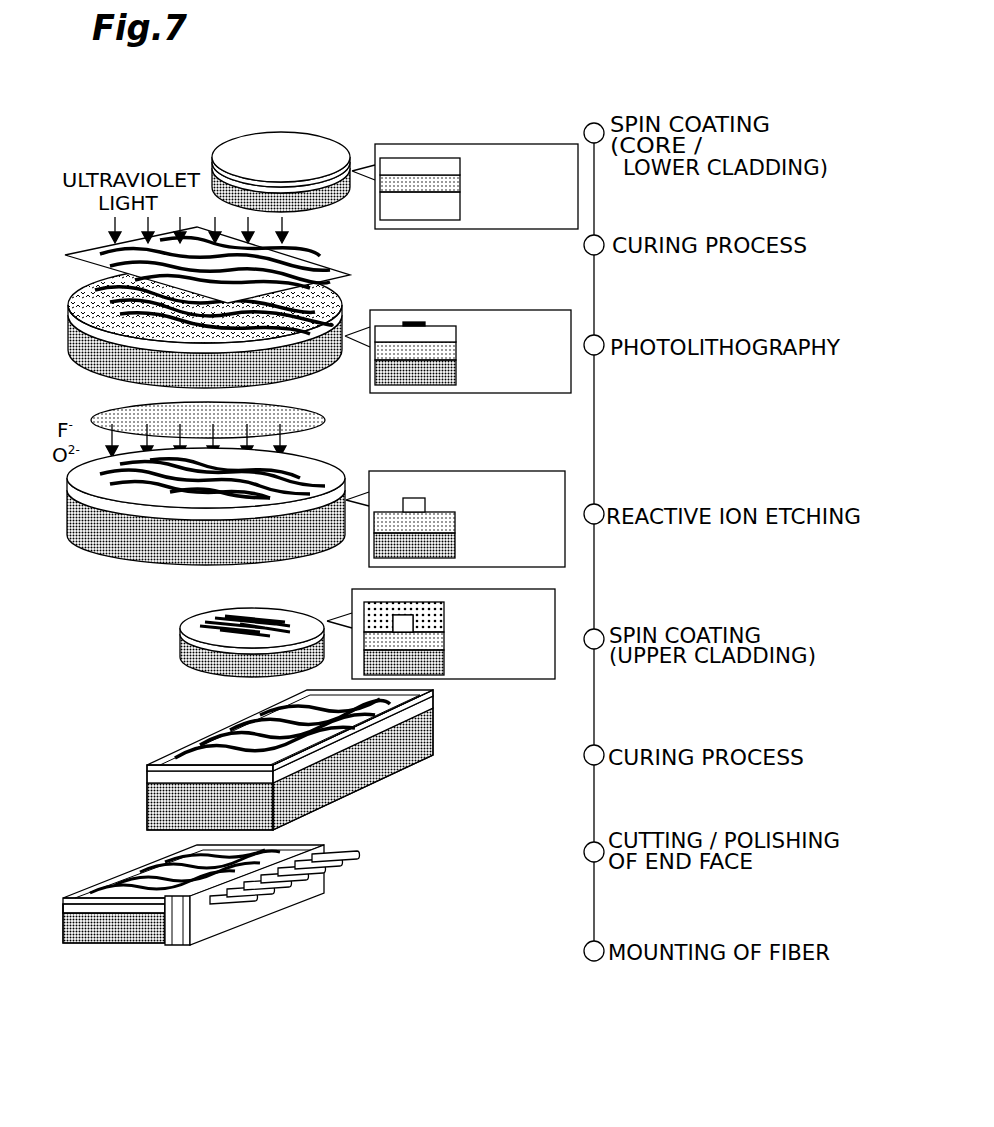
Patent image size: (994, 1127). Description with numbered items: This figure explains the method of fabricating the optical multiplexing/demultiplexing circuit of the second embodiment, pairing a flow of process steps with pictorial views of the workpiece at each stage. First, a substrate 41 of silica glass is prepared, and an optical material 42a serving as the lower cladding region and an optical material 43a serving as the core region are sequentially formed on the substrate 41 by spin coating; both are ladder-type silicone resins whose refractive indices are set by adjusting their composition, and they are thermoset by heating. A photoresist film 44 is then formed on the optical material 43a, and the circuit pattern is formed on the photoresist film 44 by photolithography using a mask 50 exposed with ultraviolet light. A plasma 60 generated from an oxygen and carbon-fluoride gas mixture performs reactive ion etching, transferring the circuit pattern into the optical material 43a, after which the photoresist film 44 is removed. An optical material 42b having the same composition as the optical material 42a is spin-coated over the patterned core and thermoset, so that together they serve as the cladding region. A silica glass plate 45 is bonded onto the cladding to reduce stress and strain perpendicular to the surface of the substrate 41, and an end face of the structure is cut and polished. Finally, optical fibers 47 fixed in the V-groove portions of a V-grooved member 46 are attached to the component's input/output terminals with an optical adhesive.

The substrate 41 is at (458, 207).
The optical material 42a is at (458, 184).
The optical material 42b is at (444, 608).
The optical material 43a is at (458, 167).
The photoresist film 44 is at (345, 291).
The silica glass plate 45 is at (433, 692).
The V-grooved member 46 is at (215, 922).
The optical fibers 47 is at (340, 860).
The mask 50 is at (352, 272).
The plasma 60 is at (325, 430).